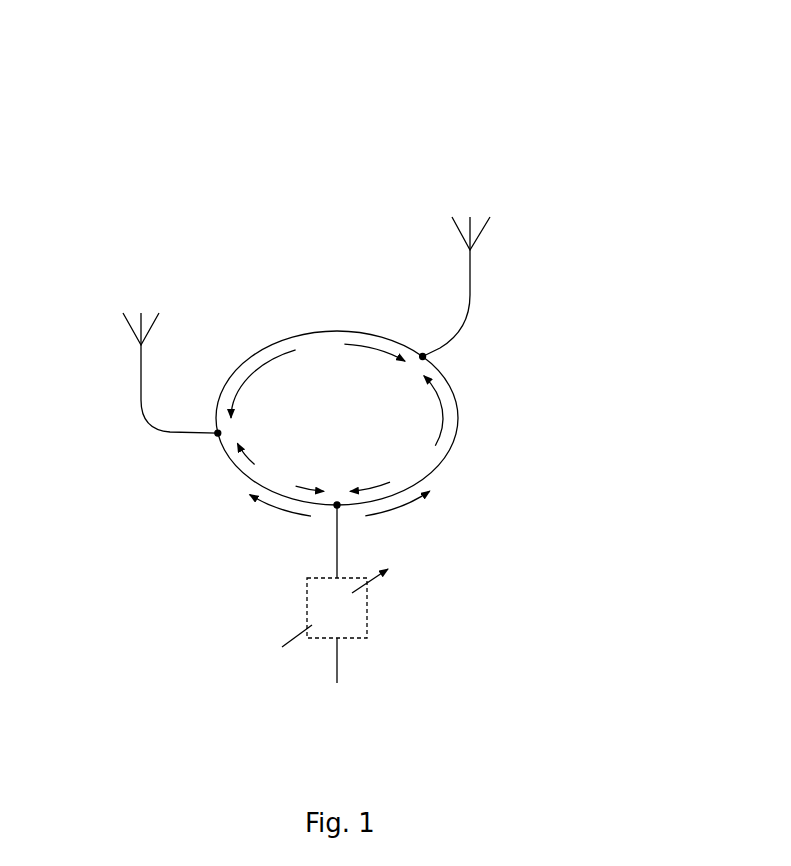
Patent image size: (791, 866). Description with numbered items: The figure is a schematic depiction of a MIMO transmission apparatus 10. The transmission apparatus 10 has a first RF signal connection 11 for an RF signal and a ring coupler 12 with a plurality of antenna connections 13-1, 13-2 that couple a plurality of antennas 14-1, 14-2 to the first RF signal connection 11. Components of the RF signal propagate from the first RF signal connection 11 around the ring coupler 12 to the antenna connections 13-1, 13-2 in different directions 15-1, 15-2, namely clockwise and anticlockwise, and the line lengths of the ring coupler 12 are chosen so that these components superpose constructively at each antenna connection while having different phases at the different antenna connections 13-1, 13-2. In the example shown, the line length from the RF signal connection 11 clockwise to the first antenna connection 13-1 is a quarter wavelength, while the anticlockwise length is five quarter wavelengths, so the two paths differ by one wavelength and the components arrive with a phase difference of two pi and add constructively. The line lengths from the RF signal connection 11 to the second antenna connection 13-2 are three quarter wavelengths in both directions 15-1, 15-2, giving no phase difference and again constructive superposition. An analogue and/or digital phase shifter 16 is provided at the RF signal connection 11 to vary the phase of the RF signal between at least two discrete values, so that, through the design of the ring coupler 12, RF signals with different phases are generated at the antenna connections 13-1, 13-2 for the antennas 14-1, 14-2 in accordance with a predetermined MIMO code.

The transmission apparatus 10 is at (432, 66).
The first RF signal connection 11 is at (337, 540).
The ring coupler 12 is at (306, 318).
The first antenna connection 13-1 is at (216, 438).
The second antenna connection 13-2 is at (421, 352).
The first antenna 14-1 is at (141, 381).
The second antenna 14-2 is at (475, 278).
The first propagation direction 15-1 is at (280, 520).
The second propagation direction 15-2 is at (397, 518).
The phase shifter 16 is at (367, 618).